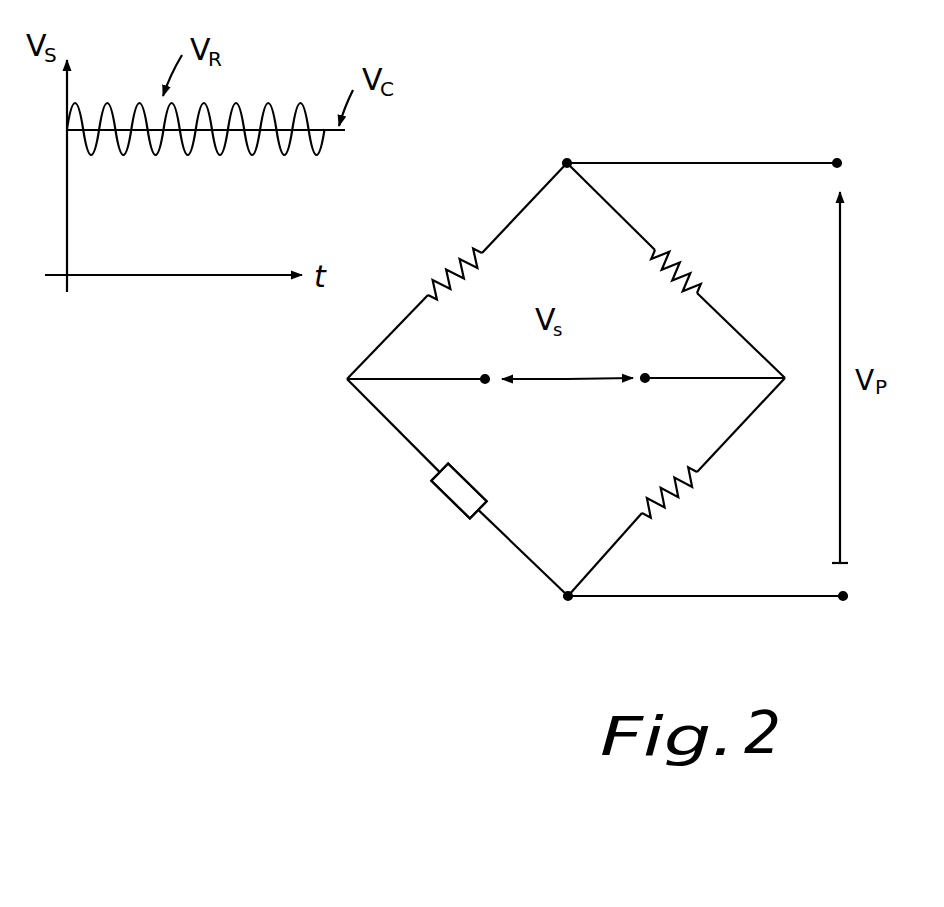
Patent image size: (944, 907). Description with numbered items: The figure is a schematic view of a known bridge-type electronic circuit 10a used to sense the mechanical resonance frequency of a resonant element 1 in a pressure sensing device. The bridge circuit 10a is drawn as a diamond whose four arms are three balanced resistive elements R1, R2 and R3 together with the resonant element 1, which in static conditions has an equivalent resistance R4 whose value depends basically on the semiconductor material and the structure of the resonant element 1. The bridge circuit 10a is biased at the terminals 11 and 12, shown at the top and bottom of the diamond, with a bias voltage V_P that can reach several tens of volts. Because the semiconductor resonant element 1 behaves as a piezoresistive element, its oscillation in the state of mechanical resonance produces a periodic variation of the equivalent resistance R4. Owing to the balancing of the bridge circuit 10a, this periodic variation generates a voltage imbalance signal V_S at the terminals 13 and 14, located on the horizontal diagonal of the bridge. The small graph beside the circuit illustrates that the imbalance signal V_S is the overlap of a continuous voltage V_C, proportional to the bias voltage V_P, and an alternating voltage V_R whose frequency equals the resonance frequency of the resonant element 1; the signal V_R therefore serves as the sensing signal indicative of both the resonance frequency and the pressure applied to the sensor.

The resonant element 1 is at (436, 513).
The bridge circuit 10a is at (518, 618).
The terminal 11 is at (718, 158).
The terminal 12 is at (713, 622).
The terminal 13 is at (457, 356).
The terminal 14 is at (676, 359).
The balanced resistive element R1 is at (457, 271).
The balanced resistive element R2 is at (676, 270).
The balanced resistive element R3 is at (676, 487).
The equivalent resistance R4 is at (457, 487).